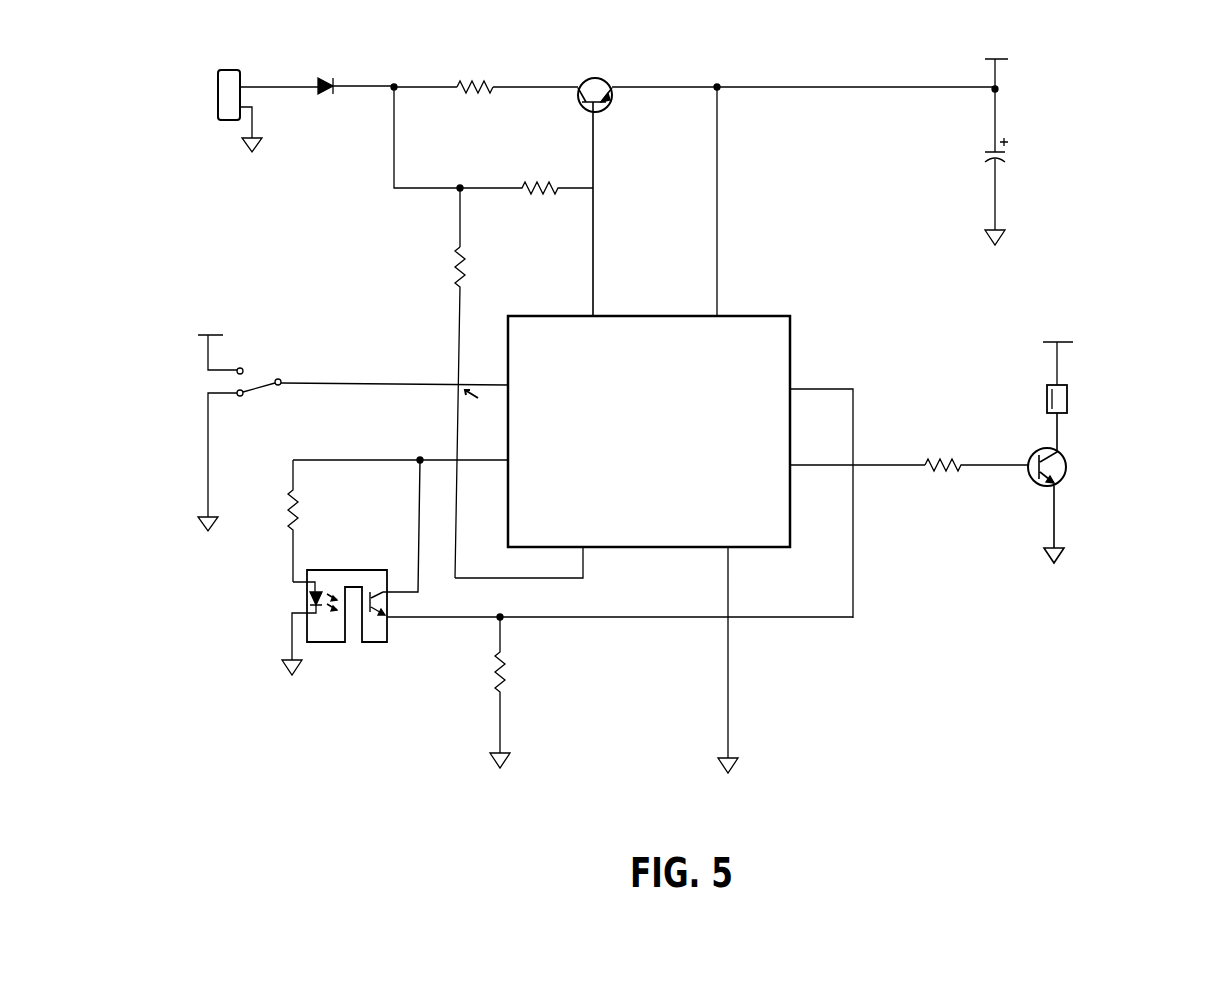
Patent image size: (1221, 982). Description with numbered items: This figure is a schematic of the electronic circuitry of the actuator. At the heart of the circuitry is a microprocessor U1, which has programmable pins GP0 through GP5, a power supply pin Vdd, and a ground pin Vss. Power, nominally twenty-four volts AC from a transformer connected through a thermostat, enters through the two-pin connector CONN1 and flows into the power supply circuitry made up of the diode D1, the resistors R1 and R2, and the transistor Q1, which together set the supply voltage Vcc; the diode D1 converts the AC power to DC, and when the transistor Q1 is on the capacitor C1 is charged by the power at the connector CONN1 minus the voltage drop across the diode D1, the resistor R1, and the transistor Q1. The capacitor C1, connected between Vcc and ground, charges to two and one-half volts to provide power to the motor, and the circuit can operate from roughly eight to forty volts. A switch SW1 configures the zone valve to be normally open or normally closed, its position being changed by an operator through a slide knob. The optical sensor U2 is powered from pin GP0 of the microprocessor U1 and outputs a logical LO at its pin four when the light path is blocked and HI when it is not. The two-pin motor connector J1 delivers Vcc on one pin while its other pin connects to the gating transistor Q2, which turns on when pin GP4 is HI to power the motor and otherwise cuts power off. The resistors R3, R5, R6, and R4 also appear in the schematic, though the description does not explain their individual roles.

The two-pin connector CONN1 is at (225, 111).
The diode D1 is at (342, 88).
The resistor R1 is at (476, 88).
The transistor Q1 is at (620, 197).
The capacitor C1 is at (1032, 139).
The resistor R2 is at (526, 192).
The resistor 1M R3 is at (457, 412).
The microprocessor U1 is at (690, 533).
The switch SW1 is at (347, 421).
The resistor 1k R5 is at (380, 519).
The optical sensor U2 is at (564, 567).
The resistor 29k R6 is at (508, 692).
The resistor 100 ohm R4 is at (976, 468).
The gating transistor Q2 is at (1074, 488).
The two-pin motor connector J1 is at (1118, 380).